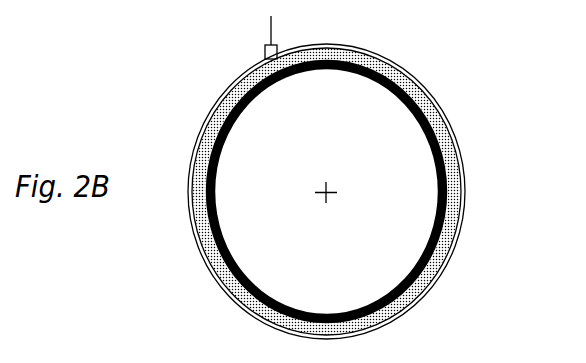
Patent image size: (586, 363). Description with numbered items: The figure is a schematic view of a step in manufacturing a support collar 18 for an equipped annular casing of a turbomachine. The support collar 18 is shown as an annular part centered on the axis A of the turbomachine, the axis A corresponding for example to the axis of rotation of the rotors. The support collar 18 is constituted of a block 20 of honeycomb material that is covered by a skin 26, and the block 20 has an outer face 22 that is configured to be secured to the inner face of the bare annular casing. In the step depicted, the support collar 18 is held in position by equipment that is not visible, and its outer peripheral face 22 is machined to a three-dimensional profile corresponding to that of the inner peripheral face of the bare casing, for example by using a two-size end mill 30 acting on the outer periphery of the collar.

The support collar 18 is at (472, 139).
The outer face 22 is at (433, 99).
The block of honeycomb material 20 is at (447, 235).
The skin 26 is at (431, 196).
The two-size end mill 30 is at (267, 45).
The axis A is at (330, 196).